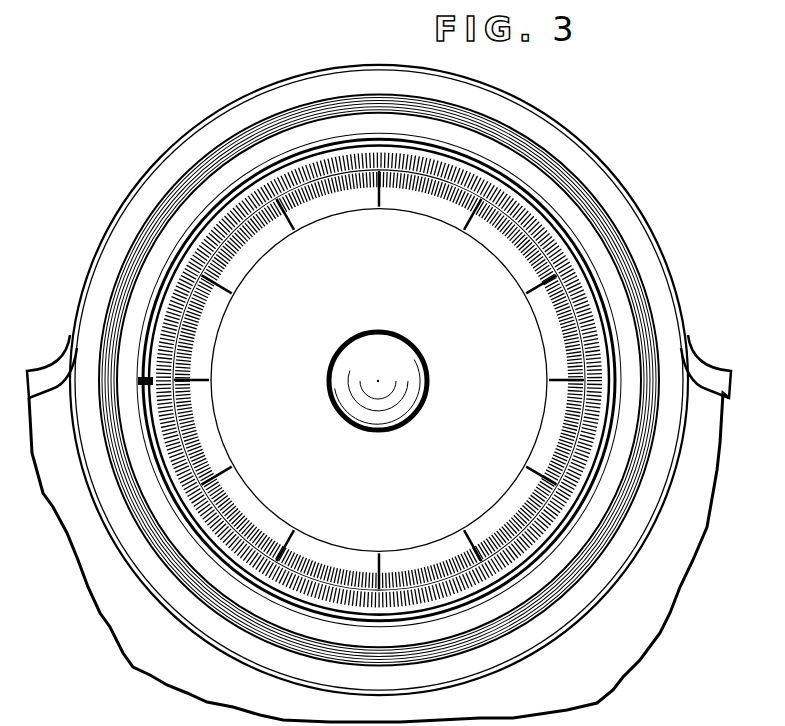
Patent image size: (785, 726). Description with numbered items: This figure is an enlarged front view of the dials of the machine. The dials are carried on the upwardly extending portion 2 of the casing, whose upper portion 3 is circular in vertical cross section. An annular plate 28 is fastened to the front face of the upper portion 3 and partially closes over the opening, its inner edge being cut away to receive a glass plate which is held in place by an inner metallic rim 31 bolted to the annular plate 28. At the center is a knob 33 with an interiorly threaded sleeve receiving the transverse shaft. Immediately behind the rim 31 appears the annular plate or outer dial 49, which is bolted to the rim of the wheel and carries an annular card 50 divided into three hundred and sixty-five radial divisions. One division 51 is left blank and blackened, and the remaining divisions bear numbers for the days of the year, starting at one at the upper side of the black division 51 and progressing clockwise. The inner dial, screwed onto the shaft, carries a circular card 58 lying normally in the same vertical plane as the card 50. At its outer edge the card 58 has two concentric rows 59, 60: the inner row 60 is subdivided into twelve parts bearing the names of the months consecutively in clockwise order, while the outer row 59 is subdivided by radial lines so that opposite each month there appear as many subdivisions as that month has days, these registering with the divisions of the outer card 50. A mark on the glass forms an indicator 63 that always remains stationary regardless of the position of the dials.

The upwardly extending portion 2 is at (628, 646).
The upper portion 3 is at (642, 258).
The annular plate 28 is at (552, 145).
The inner metallic rim 31 is at (470, 155).
The knob 33 is at (397, 374).
The outer dial 49 is at (533, 196).
The annular card 50 is at (538, 222).
The blank division 51 is at (190, 378).
The circular card 58 is at (379, 380).
The outer row 59 is at (478, 533).
The inner row 60 is at (405, 552).
The indicator 63 is at (143, 384).